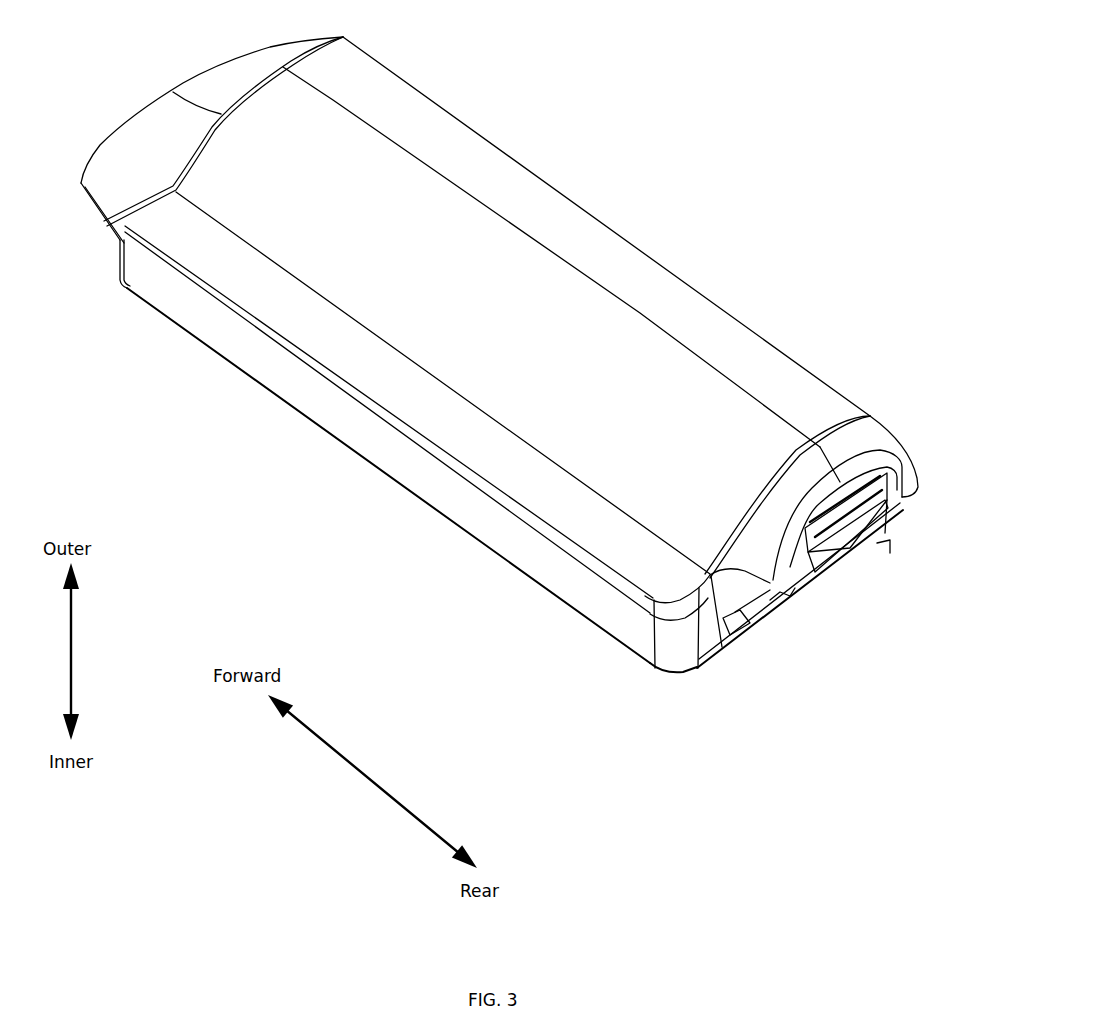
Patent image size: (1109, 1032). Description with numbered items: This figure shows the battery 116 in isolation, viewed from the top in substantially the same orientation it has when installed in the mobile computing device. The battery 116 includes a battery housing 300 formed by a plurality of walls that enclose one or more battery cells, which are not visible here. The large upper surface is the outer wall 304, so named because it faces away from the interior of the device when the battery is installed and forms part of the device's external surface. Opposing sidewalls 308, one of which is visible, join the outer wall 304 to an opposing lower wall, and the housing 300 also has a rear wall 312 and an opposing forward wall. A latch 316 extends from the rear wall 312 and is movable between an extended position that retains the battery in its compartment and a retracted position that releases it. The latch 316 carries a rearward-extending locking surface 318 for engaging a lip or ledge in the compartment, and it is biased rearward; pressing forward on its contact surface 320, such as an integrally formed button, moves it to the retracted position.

The battery 116 is at (732, 137).
The battery housing 300 is at (778, 347).
The outer wall 304 is at (475, 153).
The sidewalls 308 is at (503, 542).
The rear wall 312 is at (733, 598).
The latch 316 is at (815, 568).
The locking surface 318 is at (783, 592).
The contact surface 320 is at (870, 515).